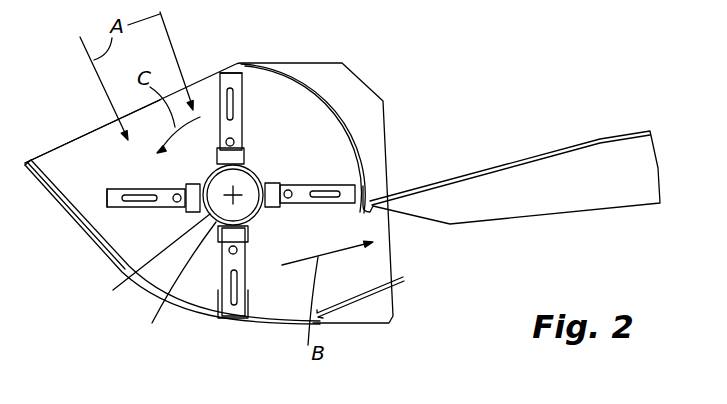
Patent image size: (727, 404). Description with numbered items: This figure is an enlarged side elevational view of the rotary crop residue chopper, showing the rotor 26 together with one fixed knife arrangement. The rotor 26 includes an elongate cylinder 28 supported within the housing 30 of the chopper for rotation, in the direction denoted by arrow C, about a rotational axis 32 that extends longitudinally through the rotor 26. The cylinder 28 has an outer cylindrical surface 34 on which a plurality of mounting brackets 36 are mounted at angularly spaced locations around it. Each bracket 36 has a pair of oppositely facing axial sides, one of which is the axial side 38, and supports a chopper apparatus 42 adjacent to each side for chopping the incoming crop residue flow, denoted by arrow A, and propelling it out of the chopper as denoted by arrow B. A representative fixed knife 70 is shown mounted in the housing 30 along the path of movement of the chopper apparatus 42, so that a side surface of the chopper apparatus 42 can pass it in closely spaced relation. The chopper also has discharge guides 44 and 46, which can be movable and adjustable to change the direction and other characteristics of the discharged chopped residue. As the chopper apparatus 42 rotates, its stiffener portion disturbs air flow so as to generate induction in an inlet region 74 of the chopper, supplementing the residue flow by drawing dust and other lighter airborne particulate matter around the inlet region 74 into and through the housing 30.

The rotor 26 is at (283, 180).
The elongate cylinder 28 is at (147, 265).
The housing 30 is at (85, 238).
The rotational axis 32 is at (233, 195).
The outer cylindrical surface 34 is at (173, 287).
The mounting bracket 36 is at (258, 168).
The axial side 38 is at (216, 162).
The chopper apparatus 42 is at (233, 66).
The discharge guide 44 is at (403, 277).
The discharge guide 46 is at (653, 132).
The fixed knife 70 is at (218, 305).
The inlet region 74 is at (108, 138).